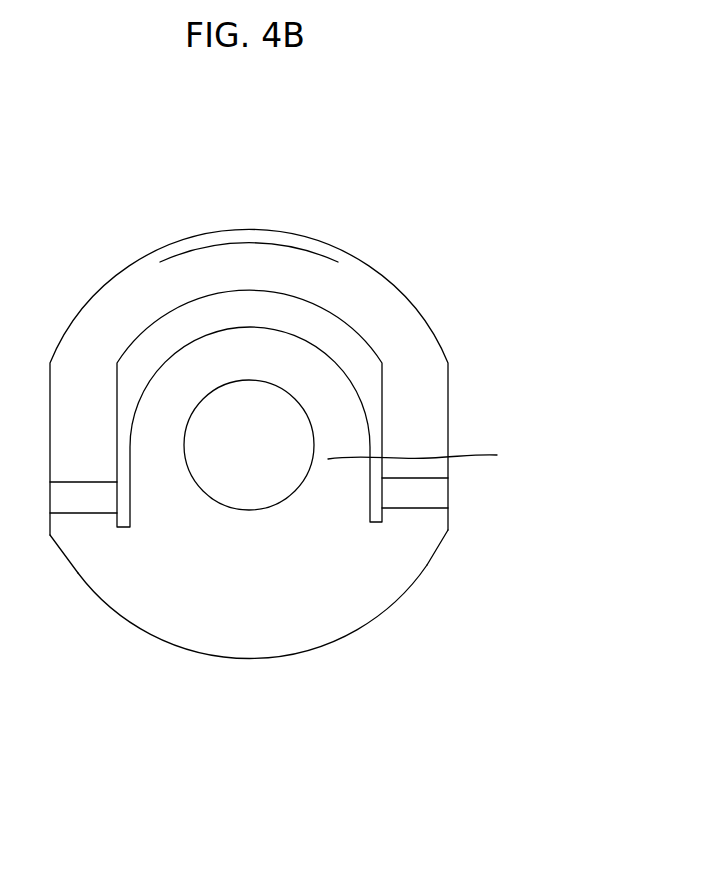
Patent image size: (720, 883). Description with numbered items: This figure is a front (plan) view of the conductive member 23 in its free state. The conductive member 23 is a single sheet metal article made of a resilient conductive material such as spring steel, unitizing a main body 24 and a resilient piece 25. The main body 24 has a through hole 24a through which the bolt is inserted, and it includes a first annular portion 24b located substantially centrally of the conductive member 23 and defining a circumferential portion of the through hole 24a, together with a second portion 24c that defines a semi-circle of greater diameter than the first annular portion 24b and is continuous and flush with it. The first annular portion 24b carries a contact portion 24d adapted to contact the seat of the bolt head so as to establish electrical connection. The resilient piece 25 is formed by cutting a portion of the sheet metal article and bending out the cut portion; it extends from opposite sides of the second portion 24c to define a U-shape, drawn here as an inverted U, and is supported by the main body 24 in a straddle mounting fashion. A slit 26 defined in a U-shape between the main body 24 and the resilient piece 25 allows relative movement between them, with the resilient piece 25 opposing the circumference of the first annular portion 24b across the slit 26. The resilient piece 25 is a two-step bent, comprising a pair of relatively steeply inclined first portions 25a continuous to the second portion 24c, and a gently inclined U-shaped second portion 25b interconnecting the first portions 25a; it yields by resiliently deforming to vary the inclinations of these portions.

The conductive member 23 is at (557, 293).
The main body 24 is at (338, 426).
The through hole 24a is at (200, 488).
The first annular portion 24b is at (332, 490).
The second portion 24c is at (283, 638).
The contact portion 24d is at (442, 460).
The resilient piece 25 is at (424, 313).
The first portion 25a is at (75, 502).
The second portion 25b is at (313, 268).
The slit 26 is at (247, 306).